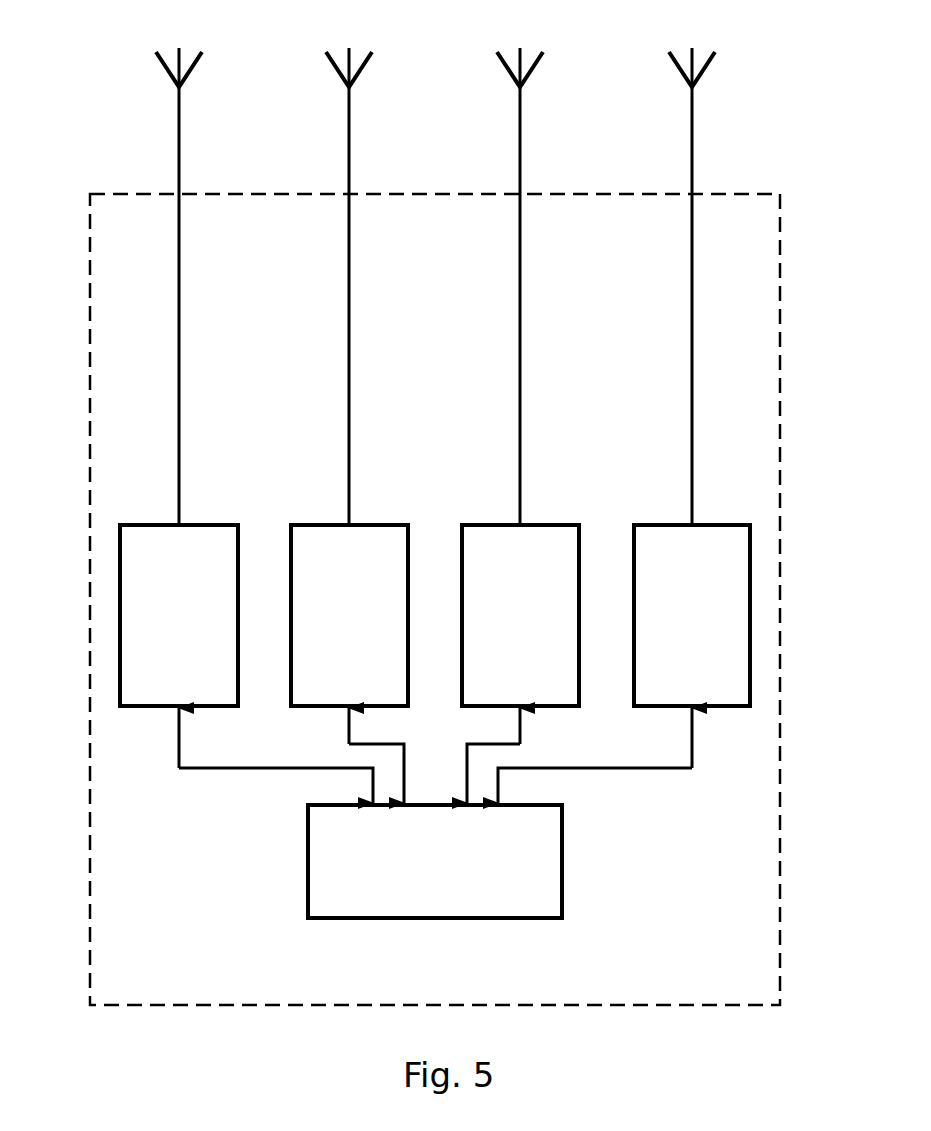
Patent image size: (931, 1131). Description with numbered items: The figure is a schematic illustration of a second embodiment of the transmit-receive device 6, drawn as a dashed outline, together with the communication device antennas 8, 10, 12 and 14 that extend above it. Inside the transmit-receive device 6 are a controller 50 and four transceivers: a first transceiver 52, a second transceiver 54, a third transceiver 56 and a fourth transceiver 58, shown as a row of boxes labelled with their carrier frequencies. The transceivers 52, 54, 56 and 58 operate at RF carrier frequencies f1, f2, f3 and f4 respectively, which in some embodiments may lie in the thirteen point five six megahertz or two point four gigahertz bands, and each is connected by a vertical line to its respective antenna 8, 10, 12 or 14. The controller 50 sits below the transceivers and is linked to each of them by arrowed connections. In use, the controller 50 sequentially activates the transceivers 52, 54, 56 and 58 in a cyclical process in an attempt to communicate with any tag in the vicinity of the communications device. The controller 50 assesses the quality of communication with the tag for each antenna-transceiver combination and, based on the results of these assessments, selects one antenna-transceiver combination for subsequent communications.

The transmit-receive device 6 is at (780, 482).
The communication device antenna 8 is at (178, 62).
The communication device antenna 10 is at (348, 62).
The communication device antenna 12 is at (519, 62).
The communication device antenna 14 is at (691, 62).
The controller 50 is at (562, 862).
The first transceiver 52 is at (133, 597).
The second transceiver 54 is at (325, 525).
The third transceiver 56 is at (500, 525).
The fourth transceiver 58 is at (737, 598).